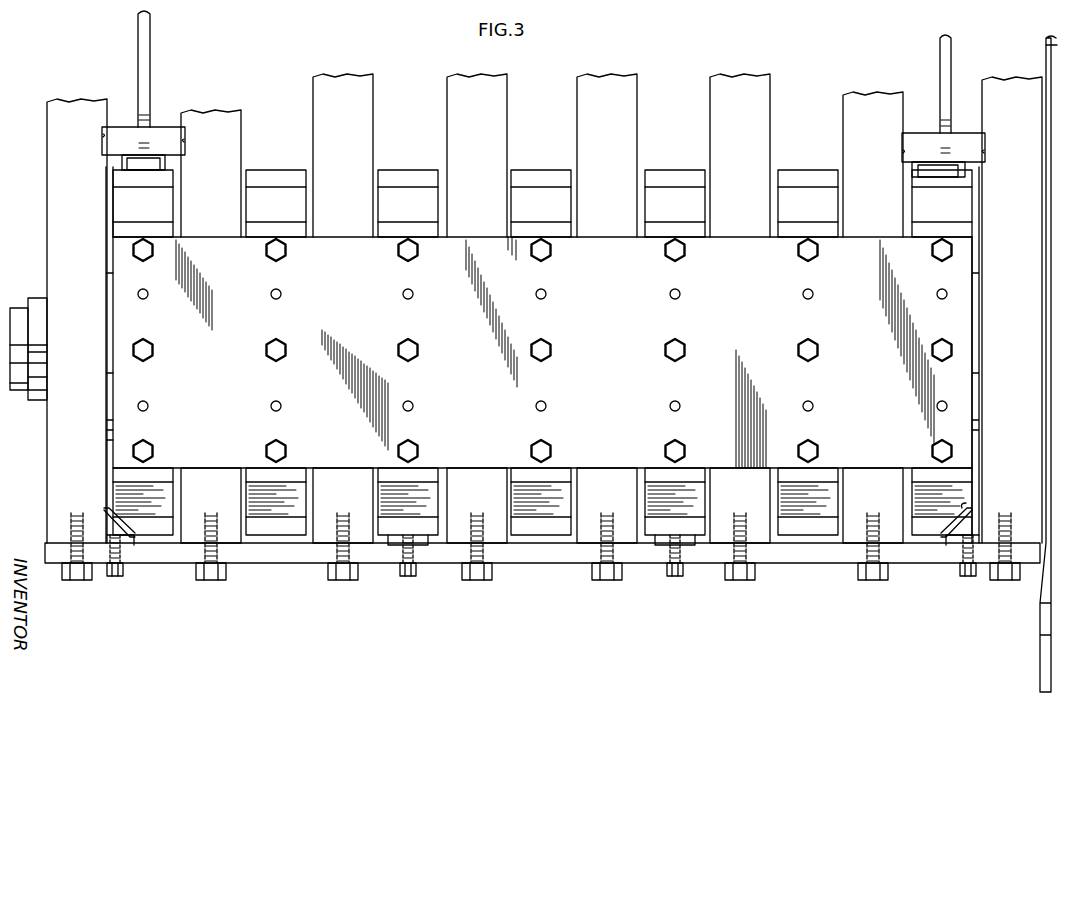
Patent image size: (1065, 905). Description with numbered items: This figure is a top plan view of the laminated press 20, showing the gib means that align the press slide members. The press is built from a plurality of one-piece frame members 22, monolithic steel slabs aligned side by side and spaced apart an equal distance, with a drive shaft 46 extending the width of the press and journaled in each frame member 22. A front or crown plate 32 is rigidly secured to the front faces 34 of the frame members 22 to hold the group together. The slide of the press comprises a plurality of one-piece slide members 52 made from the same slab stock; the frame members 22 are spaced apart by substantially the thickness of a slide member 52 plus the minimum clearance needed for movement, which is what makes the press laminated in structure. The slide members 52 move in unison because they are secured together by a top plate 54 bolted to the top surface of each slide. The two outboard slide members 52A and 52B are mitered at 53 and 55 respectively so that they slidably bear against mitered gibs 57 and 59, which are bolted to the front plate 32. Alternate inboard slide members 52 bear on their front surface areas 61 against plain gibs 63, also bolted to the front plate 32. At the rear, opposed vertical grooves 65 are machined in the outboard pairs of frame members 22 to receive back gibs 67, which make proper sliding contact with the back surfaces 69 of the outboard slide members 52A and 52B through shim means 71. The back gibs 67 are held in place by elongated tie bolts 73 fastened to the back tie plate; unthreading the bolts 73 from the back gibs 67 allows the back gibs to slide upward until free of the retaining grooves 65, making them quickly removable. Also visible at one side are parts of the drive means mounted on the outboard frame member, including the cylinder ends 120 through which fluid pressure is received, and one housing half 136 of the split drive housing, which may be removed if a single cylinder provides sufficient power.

The laminated press 20 is at (614, 298).
The frame members 22 is at (1012, 82).
The front or crown plate 32 is at (50, 548).
The front faces 34 is at (188, 545).
The drive shaft 46 is at (42, 360).
The slide members 52 is at (285, 523).
The outboard slide member 52A is at (160, 540).
The outboard slide member 52B is at (921, 527).
The miter 53 is at (113, 512).
The top plate 54 is at (757, 248).
The miter 55 is at (967, 511).
The mitered gib 57 is at (110, 555).
The mitered gib 59 is at (973, 555).
The front surface areas 61 is at (388, 545).
The plain gibs 63 is at (418, 540).
The vertical grooves 65 is at (103, 134).
The back gibs 67 is at (163, 135).
The back surfaces 69 is at (170, 166).
The shim means 71 is at (127, 168).
The tie bolts 73 is at (146, 50).
The cylinder ends 120 is at (1040, 683).
The housing half 136 is at (1050, 42).